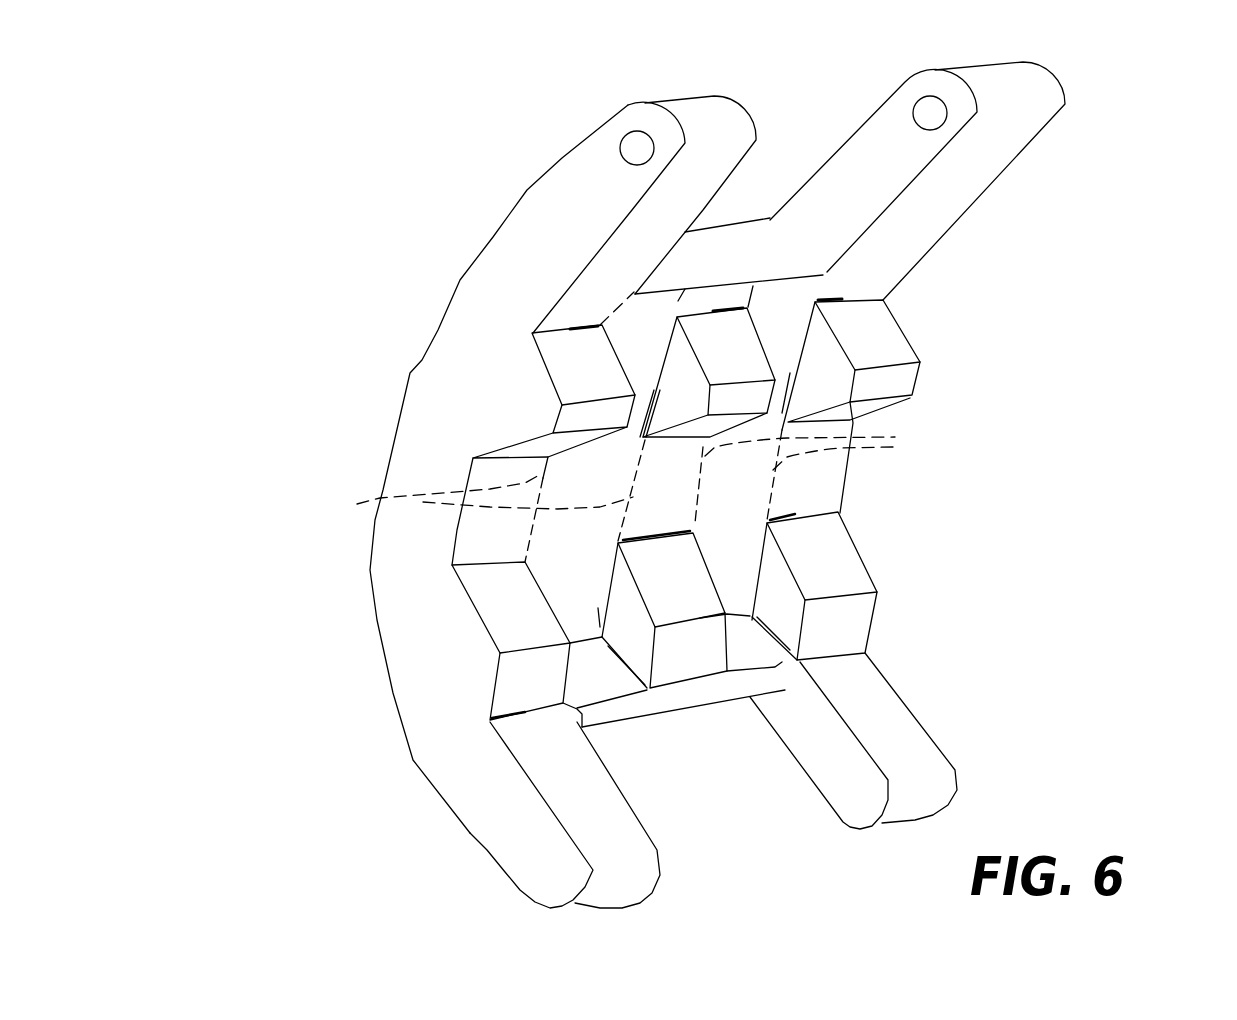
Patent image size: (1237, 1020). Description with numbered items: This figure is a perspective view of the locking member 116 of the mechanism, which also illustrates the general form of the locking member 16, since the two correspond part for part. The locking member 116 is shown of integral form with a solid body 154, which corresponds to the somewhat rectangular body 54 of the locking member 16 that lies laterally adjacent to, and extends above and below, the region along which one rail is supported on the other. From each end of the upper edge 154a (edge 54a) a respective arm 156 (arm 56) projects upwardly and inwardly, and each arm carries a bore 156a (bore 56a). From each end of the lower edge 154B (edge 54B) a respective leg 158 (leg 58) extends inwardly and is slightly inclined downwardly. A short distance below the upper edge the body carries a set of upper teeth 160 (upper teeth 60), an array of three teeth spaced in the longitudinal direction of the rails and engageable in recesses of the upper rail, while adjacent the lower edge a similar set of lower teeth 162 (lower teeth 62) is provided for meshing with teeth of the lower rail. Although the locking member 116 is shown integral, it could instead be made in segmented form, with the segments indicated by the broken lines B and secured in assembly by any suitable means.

The locking member 16 is at (698, 469).
The locking member 116 is at (396, 287).
The arm 56 is at (717, 431).
The arm 156 is at (990, 80).
The bore 56a is at (814, 130).
The bore 156a is at (637, 148).
The upper edge 54a is at (845, 271).
The edge 154a is at (793, 253).
The body 54 is at (643, 433).
The solid body 154 is at (727, 511).
The lower edge 54B is at (674, 698).
The edge 154B is at (725, 745).
The leg 58 is at (713, 780).
The leg 158 is at (813, 772).
The upper teeth 60 is at (732, 366).
The upper teeth 160 is at (572, 387).
The lower teeth 62 is at (627, 616).
The lower teeth 162 is at (657, 595).